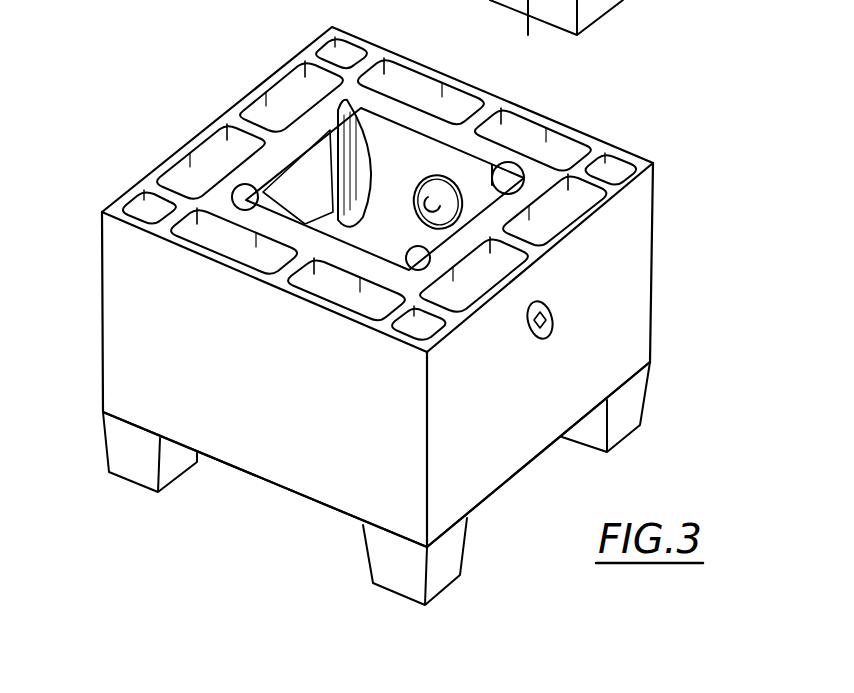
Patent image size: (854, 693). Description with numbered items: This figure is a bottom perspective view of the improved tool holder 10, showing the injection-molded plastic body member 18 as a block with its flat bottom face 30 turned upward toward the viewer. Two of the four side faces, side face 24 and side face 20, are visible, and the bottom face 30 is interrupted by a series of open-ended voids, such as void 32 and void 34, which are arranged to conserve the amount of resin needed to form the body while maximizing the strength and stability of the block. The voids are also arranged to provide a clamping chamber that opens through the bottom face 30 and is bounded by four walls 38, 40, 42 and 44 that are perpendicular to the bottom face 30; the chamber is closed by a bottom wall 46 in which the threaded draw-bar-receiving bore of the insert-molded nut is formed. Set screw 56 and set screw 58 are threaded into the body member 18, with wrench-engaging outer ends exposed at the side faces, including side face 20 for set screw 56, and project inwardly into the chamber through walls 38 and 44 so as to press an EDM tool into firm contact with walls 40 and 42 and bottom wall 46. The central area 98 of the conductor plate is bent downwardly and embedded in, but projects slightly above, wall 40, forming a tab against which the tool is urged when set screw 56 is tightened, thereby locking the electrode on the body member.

The tool holder 10 is at (104, 261).
The plastic body member 18 is at (623, 225).
The side face 20 is at (508, 428).
The side face 24 is at (395, 428).
The bottom flat face 30 is at (573, 133).
The open-ended void 32 is at (203, 164).
The open-ended void 34 is at (423, 97).
The chamber wall 38 is at (407, 157).
The chamber wall 40 is at (312, 147).
The chamber wall 42 is at (300, 223).
The chamber wall 44 is at (462, 290).
The bottom wall of the chamber 46 is at (310, 143).
The set screw 56 is at (557, 323).
The set screw 58 is at (445, 178).
The central area of flat plate portion 98 is at (316, 199).